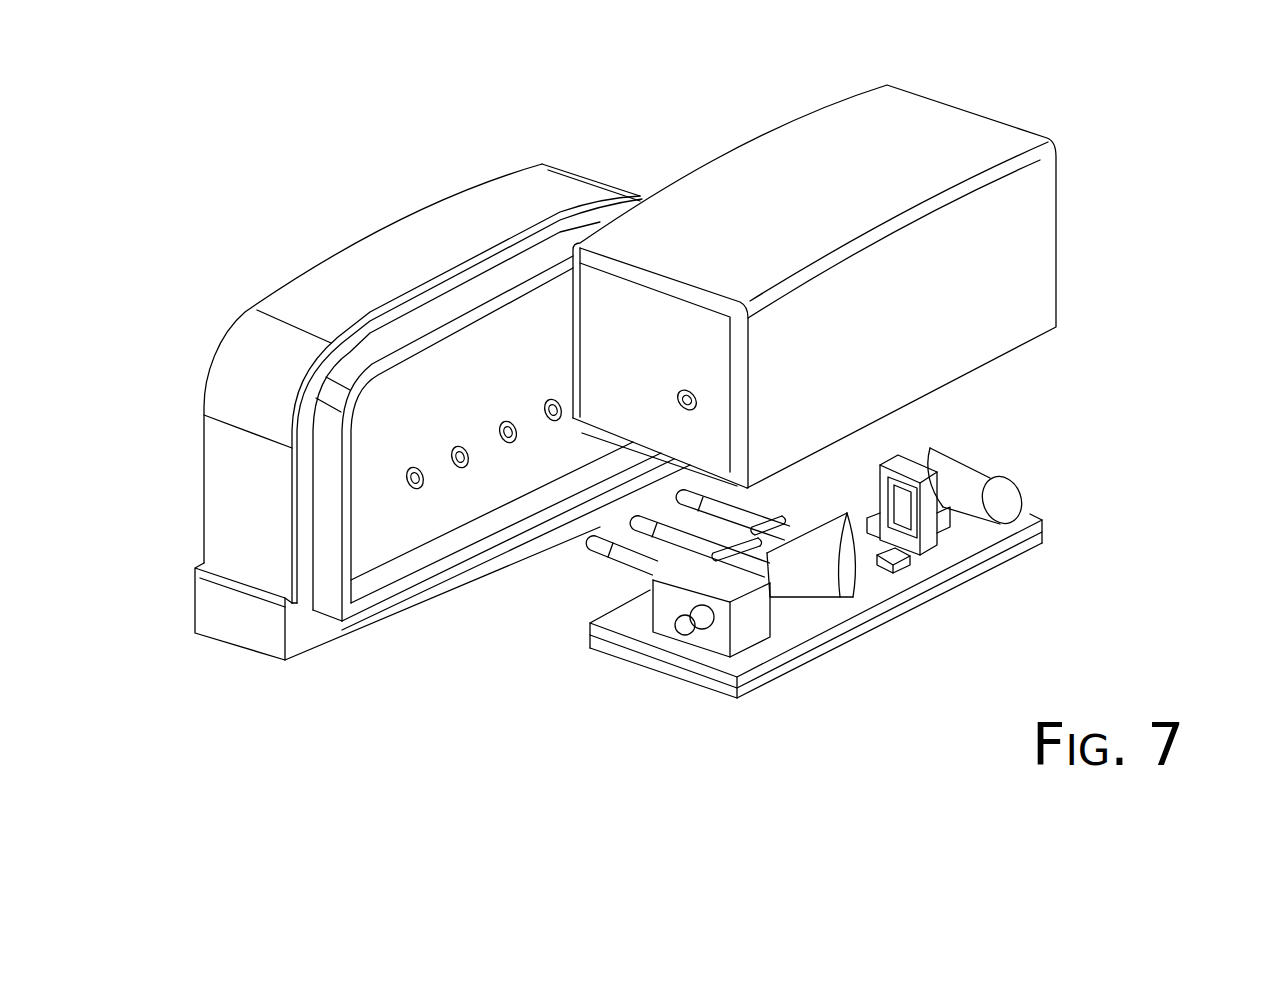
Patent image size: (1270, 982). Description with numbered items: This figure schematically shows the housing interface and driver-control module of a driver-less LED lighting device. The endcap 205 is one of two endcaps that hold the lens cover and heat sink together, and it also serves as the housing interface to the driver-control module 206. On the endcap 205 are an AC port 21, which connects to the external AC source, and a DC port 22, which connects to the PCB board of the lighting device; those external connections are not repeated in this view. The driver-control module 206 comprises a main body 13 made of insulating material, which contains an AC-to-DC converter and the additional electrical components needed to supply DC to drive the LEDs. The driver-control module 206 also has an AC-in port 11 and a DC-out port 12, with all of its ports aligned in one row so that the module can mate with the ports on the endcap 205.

The main body 13 is at (915, 127).
The endcap 205 is at (503, 197).
The driver-control module 206 is at (1073, 240).
The DC-out port 12 is at (742, 513).
The AC port 21 is at (460, 462).
The DC port 22 is at (554, 416).
The AC-in port 11 is at (673, 533).